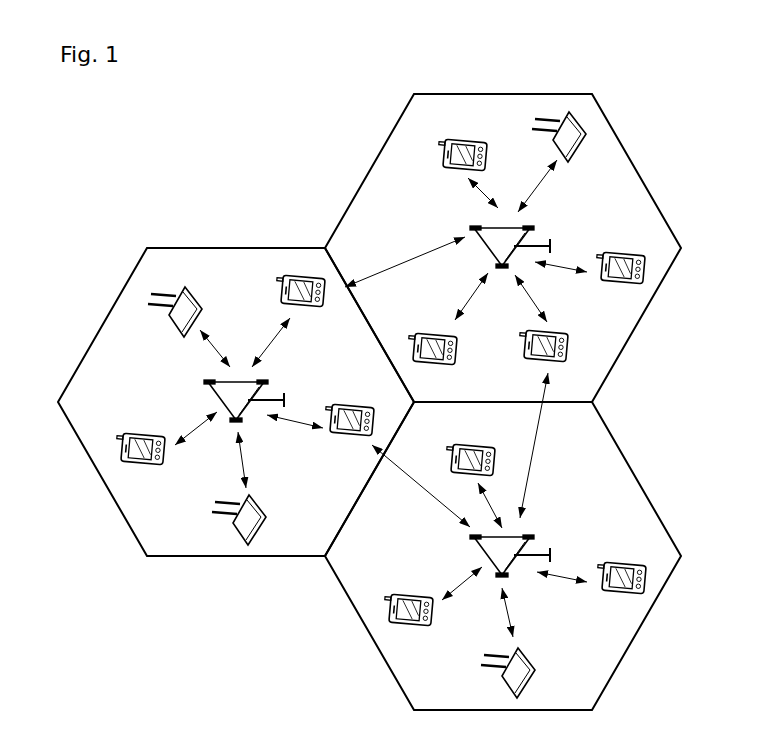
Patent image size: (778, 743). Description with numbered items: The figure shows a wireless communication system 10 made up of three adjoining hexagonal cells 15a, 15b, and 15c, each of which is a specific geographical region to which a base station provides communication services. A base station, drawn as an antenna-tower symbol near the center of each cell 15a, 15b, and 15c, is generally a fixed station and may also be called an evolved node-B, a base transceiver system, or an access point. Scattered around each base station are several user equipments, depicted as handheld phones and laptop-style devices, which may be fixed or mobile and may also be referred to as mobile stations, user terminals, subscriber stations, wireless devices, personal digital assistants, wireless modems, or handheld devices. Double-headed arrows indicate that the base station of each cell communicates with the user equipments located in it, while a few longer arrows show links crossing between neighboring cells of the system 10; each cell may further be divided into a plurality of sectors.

The wireless communication system 10 is at (150, 180).
The cell 15a is at (225, 247).
The cell 15b is at (380, 150).
The cell 15c is at (378, 650).